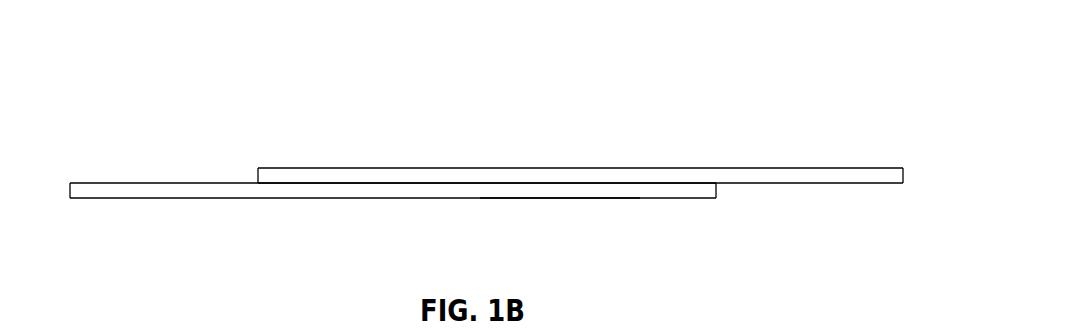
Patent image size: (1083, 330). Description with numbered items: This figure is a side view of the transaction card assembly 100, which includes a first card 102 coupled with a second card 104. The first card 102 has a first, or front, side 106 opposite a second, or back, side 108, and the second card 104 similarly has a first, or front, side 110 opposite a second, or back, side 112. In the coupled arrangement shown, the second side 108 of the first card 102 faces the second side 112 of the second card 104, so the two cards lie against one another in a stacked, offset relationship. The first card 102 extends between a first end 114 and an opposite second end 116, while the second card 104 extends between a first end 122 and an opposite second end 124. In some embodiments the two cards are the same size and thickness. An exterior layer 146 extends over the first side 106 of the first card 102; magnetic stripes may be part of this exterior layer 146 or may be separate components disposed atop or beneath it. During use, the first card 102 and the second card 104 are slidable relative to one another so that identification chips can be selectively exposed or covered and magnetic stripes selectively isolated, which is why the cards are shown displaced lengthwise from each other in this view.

The assembly 100 is at (158, 48).
The first card 102 is at (388, 209).
The second card 104 is at (616, 158).
The first side of first card 106 is at (195, 198).
The second side of first card 108 is at (103, 183).
The first side of second card 110 is at (472, 168).
The second side of second card 112 is at (824, 184).
The first end of first card 114 is at (70, 198).
The second end of first card 116 is at (716, 198).
The first end of second card 122 is at (258, 168).
The second end of second card 124 is at (905, 176).
The exterior layer 146 is at (548, 198).